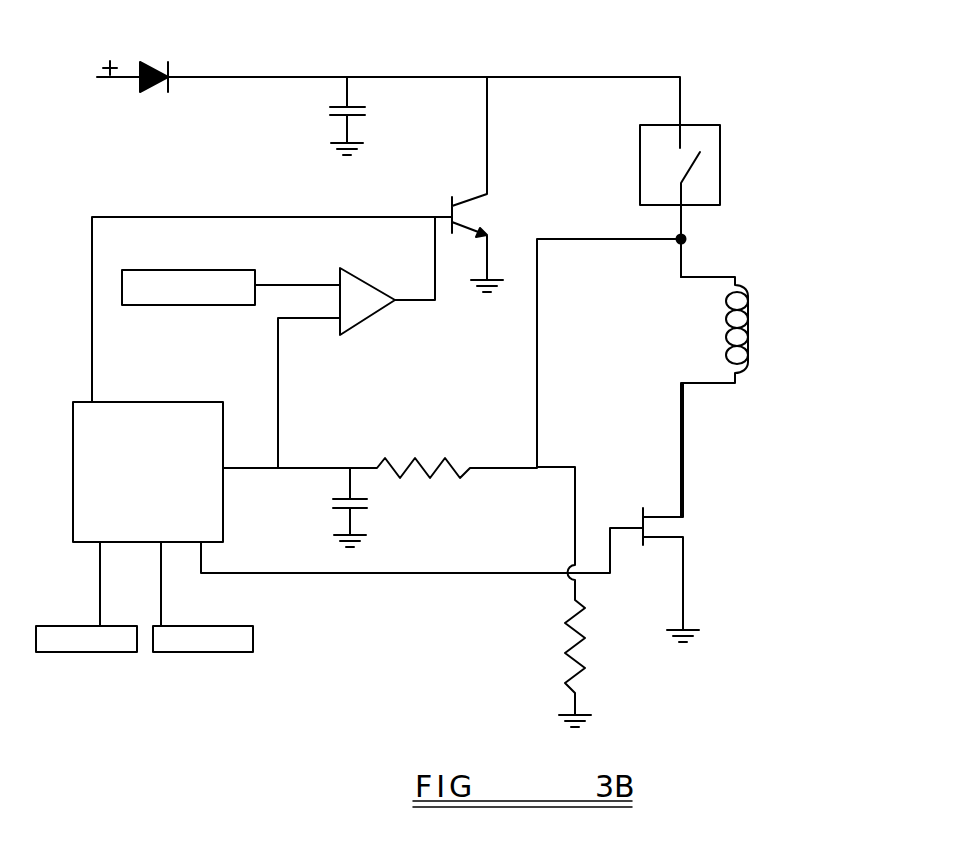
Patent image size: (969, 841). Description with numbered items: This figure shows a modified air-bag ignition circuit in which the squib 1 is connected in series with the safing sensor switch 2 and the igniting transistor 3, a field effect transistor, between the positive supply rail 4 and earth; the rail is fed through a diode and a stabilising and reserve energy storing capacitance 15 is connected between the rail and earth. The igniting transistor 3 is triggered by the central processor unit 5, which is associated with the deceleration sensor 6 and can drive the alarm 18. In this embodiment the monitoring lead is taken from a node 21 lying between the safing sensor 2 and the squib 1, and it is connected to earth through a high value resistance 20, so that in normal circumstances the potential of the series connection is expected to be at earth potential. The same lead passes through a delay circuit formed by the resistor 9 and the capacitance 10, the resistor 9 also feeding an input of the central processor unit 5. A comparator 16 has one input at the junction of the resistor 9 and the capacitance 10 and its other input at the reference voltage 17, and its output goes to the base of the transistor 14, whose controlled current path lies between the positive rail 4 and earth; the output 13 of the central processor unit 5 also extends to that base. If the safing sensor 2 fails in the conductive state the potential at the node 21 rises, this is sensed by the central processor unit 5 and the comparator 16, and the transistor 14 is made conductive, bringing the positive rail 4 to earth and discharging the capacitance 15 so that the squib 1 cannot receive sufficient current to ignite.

The squib 1 is at (748, 330).
The safing sensor switch 2 is at (720, 178).
The igniting transistor 3 is at (672, 527).
The positive supply rail 4 is at (606, 76).
The central processor unit 5 is at (73, 506).
The deceleration sensor 6 is at (67, 652).
The resistor 9 is at (437, 470).
The capacitance 10 is at (368, 508).
The output 13 is at (92, 343).
The transistor 14 is at (458, 180).
The stabilising and reserve energy storing capacitance 15 is at (332, 114).
The comparator 16 is at (362, 278).
The reference voltage 17 is at (200, 305).
The alarm 18 is at (232, 652).
The high value resistance 20 is at (574, 648).
The node 21 is at (686, 241).